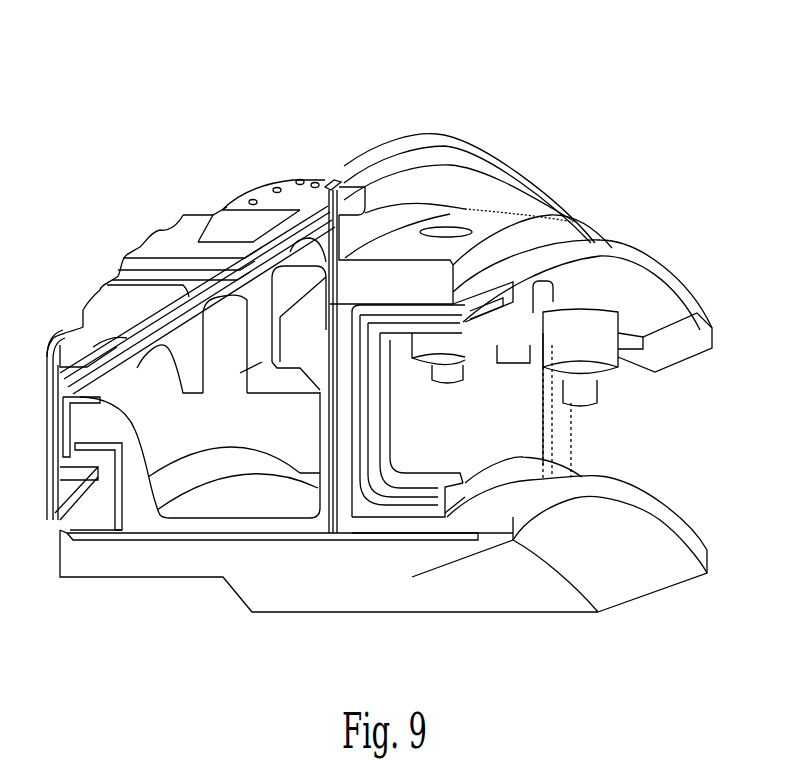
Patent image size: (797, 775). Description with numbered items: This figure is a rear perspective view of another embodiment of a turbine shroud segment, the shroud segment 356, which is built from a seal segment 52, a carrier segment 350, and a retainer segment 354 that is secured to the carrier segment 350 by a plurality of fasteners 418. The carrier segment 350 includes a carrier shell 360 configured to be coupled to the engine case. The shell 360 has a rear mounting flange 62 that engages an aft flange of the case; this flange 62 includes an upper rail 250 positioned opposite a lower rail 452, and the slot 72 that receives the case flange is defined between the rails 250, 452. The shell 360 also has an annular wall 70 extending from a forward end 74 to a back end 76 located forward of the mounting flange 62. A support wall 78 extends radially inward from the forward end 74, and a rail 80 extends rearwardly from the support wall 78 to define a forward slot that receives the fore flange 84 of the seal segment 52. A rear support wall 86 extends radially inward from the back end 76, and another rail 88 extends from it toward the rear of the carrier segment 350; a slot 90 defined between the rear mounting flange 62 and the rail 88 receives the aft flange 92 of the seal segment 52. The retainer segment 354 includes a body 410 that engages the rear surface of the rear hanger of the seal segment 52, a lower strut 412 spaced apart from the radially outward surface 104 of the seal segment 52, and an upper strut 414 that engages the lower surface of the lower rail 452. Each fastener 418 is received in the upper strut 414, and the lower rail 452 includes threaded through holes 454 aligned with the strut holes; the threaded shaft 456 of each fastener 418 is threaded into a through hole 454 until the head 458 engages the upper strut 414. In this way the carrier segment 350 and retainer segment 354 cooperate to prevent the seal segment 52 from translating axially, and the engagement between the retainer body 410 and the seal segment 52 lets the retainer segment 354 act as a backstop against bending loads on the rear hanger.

The shroud segment 356 is at (226, 84).
The seal segment 52 is at (200, 568).
The rear mounting flange 62 is at (404, 149).
The annular wall 70 is at (137, 365).
The slot 72 is at (482, 186).
The forward end 74 is at (55, 409).
The back end 76 is at (290, 252).
The support wall 78 is at (47, 462).
The rail 80 is at (56, 508).
The fore flange 84 is at (83, 500).
The rear support wall 86 is at (254, 331).
The rail 88 is at (287, 406).
The slot 90 is at (310, 285).
The aft flange 92 is at (290, 400).
The radially outward surface 104 is at (500, 505).
The upper rail 250 is at (353, 200).
The carrier segment 350 is at (178, 236).
The retainer segment 354 is at (705, 327).
The carrier shell 360 is at (306, 187).
The body 410 is at (457, 432).
The lower strut 412 is at (412, 518).
The upper strut 414 is at (652, 262).
The fastener 418 is at (513, 358).
The lower rail 452 is at (563, 232).
The through hole 454 is at (474, 229).
The threaded shaft 456 is at (446, 227).
The head 458 is at (540, 307).